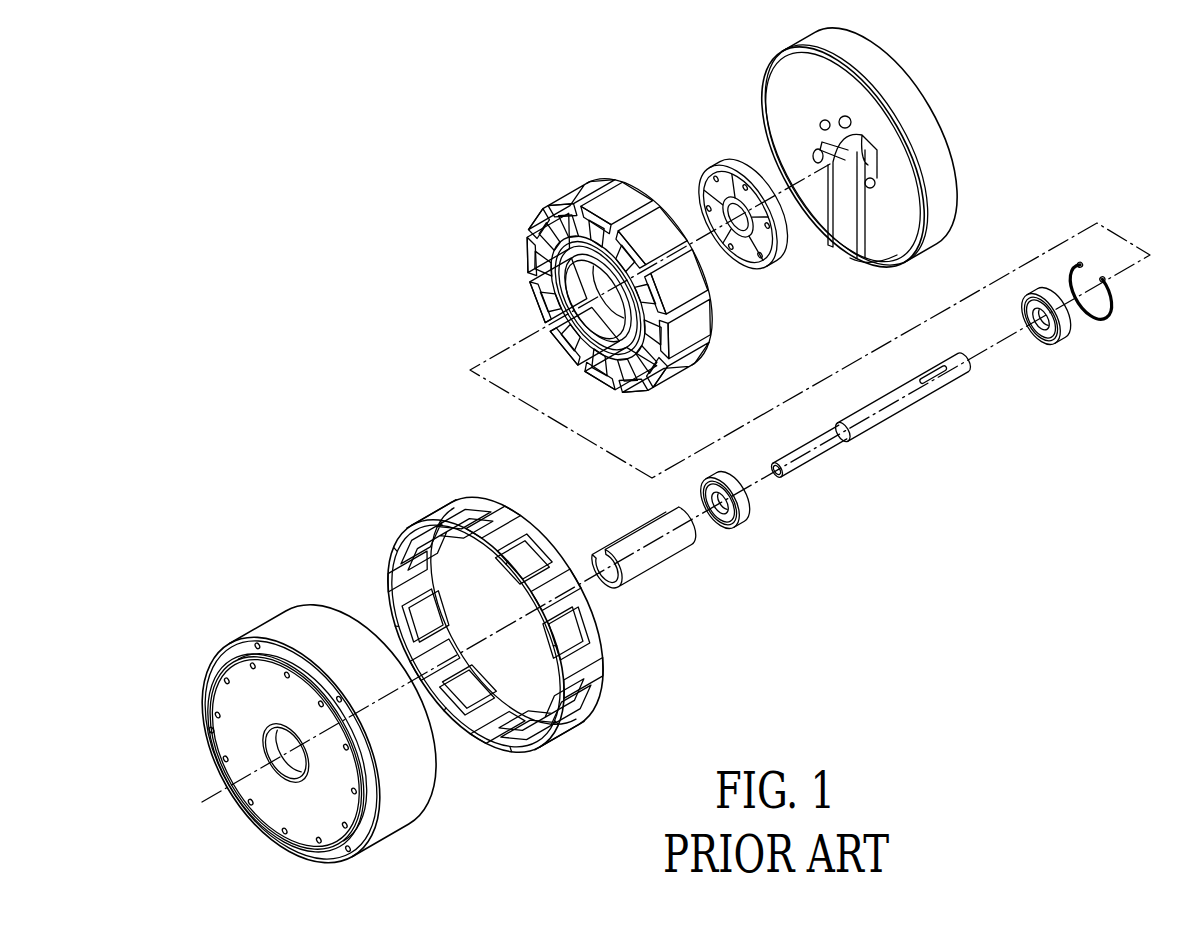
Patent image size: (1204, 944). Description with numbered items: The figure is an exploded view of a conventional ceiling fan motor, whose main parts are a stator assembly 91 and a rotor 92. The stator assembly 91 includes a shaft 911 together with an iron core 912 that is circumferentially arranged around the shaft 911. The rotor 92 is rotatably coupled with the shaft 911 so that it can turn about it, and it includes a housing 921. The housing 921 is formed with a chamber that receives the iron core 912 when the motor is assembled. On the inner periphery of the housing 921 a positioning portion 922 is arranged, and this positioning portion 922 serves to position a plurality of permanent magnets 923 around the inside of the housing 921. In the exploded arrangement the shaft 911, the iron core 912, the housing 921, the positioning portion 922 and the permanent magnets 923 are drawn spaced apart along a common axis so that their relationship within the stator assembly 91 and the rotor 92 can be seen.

The stator assembly 91 is at (811, 297).
The shaft 911 is at (863, 430).
The iron core 912 is at (583, 193).
The rotor 92 is at (456, 665).
The housing 921 is at (238, 647).
The positioning portion 922 is at (458, 527).
The permanent magnets 923 is at (498, 530).